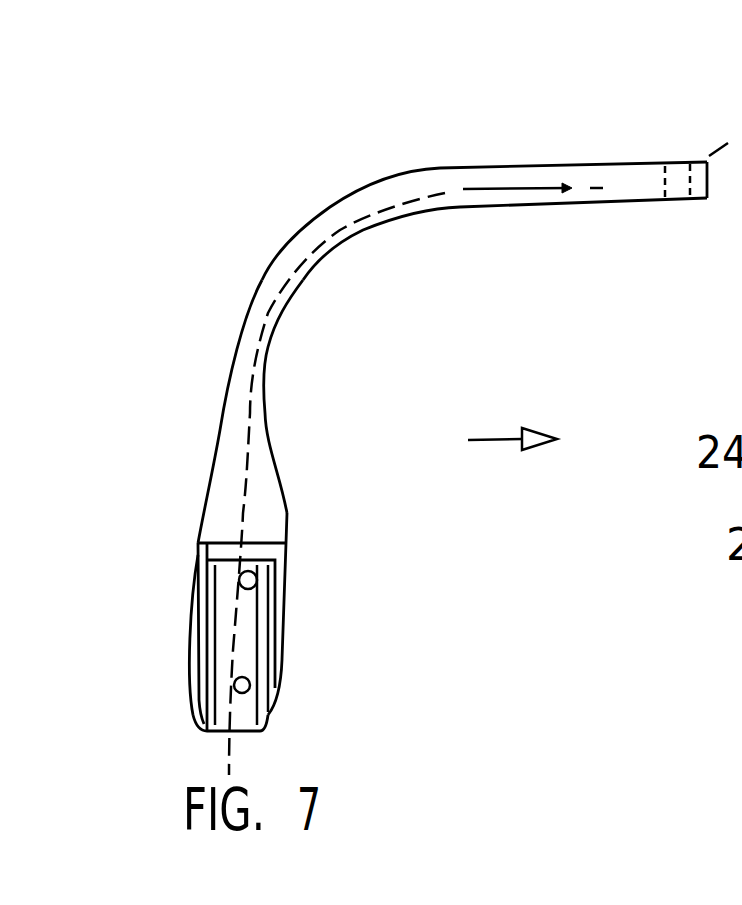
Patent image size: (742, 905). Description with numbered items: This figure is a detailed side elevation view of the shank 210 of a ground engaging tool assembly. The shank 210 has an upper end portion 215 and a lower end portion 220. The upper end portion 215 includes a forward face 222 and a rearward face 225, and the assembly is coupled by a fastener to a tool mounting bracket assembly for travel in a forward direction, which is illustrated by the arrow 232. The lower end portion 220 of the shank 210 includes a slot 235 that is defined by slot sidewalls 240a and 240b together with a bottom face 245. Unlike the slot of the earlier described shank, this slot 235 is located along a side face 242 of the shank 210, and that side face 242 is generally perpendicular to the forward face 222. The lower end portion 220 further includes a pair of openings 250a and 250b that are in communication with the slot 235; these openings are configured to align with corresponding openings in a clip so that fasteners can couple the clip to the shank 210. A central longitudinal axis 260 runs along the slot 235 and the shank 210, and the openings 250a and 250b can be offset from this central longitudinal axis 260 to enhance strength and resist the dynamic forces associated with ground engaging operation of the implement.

The shank 210 is at (390, 263).
The upper end portion 215 is at (703, 212).
The lower end portion 220 is at (312, 556).
The forward face 222 is at (518, 206).
The rearward face 225 is at (567, 163).
The arrow 232 is at (490, 438).
The slot 235 is at (224, 714).
The slot sidewall 240a is at (208, 613).
The slot sidewall 240b is at (260, 702).
The side face 242 is at (228, 495).
The bottom face 245 is at (227, 613).
The opening 250a is at (242, 597).
The opening 250b is at (240, 677).
The central longitudinal axis 260 is at (247, 487).